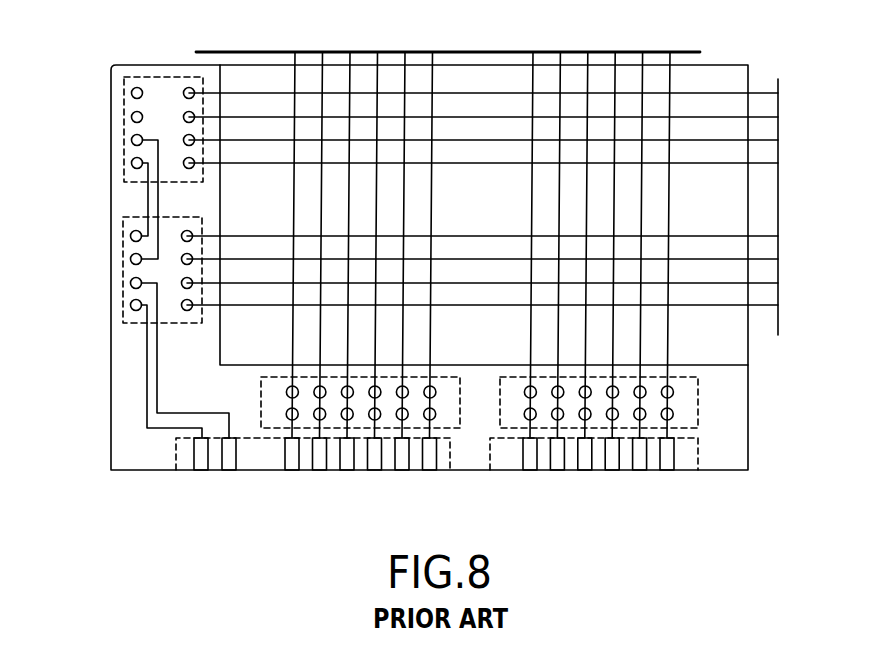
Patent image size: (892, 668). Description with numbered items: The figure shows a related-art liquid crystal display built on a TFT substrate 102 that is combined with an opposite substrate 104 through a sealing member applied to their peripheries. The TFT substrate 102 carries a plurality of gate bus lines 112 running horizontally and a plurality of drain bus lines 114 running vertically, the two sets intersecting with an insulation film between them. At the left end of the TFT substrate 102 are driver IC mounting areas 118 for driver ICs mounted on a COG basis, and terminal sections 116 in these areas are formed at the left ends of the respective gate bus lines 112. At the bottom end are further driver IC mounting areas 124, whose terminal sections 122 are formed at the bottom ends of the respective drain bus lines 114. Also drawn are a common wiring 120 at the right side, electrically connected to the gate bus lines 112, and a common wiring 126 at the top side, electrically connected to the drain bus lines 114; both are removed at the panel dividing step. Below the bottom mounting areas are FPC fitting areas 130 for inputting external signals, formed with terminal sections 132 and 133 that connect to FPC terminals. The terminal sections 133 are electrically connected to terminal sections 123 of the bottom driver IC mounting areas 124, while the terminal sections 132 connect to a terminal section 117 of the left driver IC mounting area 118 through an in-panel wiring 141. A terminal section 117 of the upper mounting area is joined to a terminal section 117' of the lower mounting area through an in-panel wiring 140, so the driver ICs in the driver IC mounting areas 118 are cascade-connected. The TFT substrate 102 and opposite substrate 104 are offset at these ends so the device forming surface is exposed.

The TFT substrate 102 is at (748, 430).
The opposite substrate 104 is at (748, 347).
The gate bus lines 112 is at (702, 165).
The drain bus lines 114 is at (433, 210).
The terminal sections 116 is at (189, 169).
The terminal section 117 is at (100, 204).
The terminal section 117' is at (97, 232).
The driver IC mounting areas 118 is at (165, 75).
The common wiring 120 is at (778, 182).
The terminal sections 122 is at (432, 387).
The terminal sections 123 is at (286, 414).
The driver IC mounting areas 124 is at (460, 428).
The common wiring 126 is at (482, 52).
The FPC fitting areas 130 is at (176, 440).
The terminal sections 132 is at (229, 470).
The terminal sections 133 is at (292, 470).
The in-panel wiring 140 is at (149, 195).
The in-panel wiring 141 is at (147, 392).